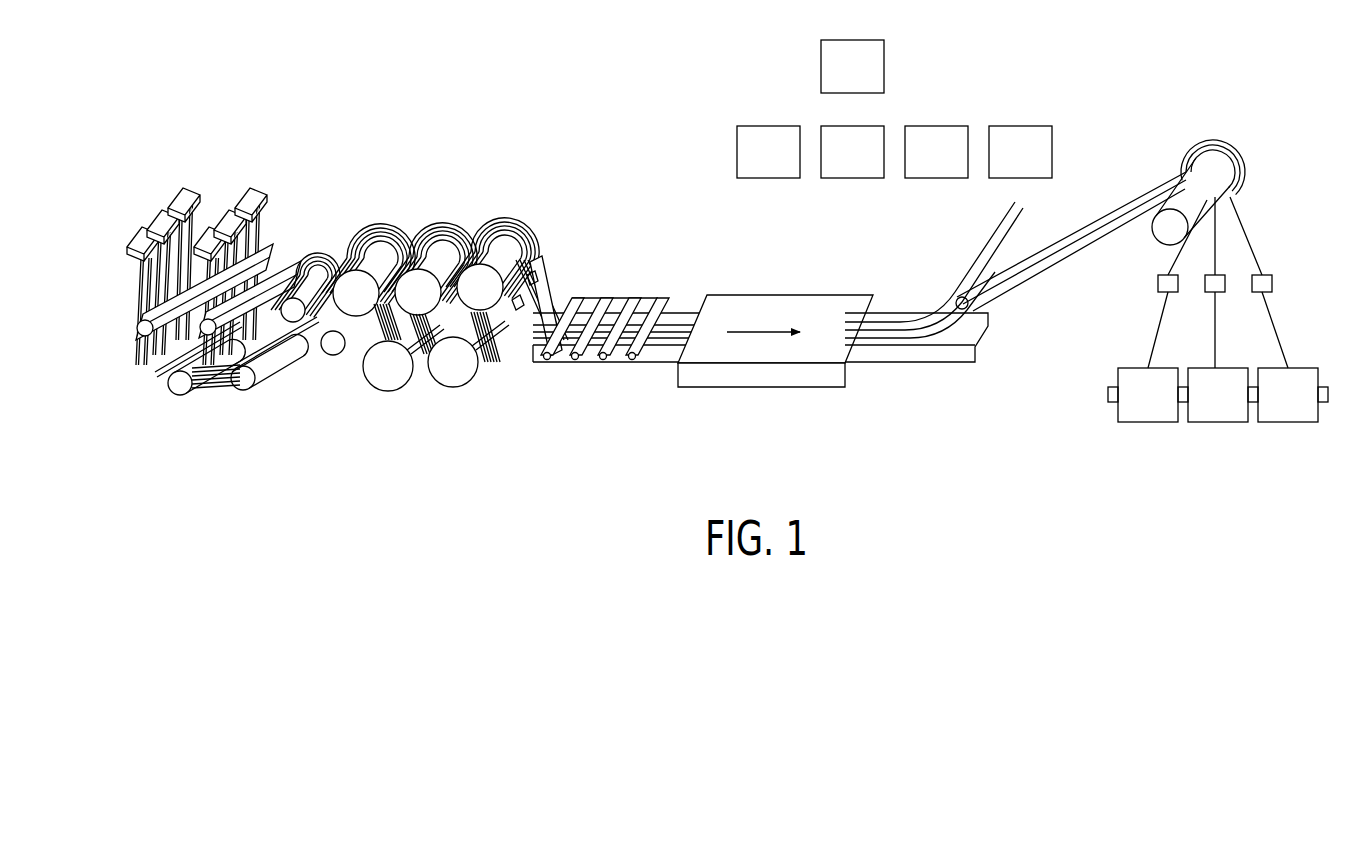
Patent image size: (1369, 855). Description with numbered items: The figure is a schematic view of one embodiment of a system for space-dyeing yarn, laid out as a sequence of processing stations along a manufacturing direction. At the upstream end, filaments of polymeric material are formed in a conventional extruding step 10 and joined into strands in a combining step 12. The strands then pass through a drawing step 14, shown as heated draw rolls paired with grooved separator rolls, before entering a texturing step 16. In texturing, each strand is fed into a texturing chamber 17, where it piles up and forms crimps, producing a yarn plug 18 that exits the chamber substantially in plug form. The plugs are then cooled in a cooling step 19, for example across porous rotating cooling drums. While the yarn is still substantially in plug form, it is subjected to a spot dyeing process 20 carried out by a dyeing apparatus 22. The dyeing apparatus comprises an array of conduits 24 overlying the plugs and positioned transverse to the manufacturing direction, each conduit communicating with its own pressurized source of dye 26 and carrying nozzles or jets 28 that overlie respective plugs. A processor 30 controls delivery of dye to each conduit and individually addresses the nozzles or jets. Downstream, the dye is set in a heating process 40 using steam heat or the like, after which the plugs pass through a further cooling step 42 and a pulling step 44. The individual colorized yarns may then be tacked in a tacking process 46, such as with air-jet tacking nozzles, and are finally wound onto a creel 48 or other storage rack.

The extruding step 10 is at (286, 158).
The combining step 12 is at (286, 216).
The drawing step 14 is at (470, 196).
The texturing step 16 is at (556, 273).
The texturing chamber 17 is at (566, 289).
The yarn plug 18 is at (534, 350).
The cooling step 19 is at (545, 361).
The spot dyeing process 20 is at (617, 306).
The dyeing apparatus 22 is at (676, 288).
The conduit 24 is at (577, 360).
The pressurized source of dye 26 is at (779, 163).
The nozzle or jet 28 is at (660, 300).
The processor 30 is at (863, 77).
The heating process 40 is at (815, 378).
The cooling step 42 is at (895, 362).
The pulling step 44 is at (1130, 245).
The tacking process 46 is at (1172, 293).
The creel 48 is at (1148, 422).